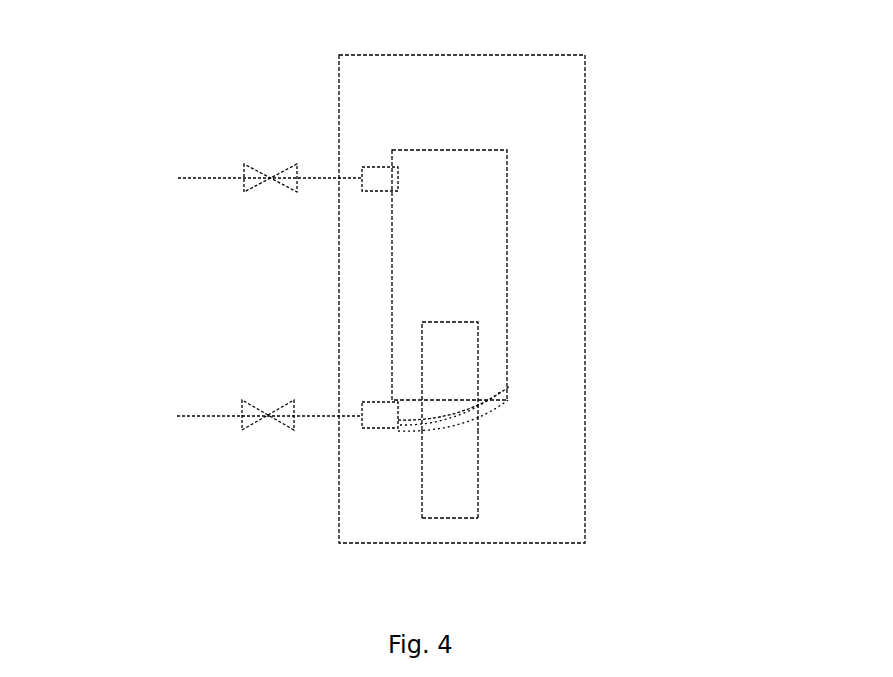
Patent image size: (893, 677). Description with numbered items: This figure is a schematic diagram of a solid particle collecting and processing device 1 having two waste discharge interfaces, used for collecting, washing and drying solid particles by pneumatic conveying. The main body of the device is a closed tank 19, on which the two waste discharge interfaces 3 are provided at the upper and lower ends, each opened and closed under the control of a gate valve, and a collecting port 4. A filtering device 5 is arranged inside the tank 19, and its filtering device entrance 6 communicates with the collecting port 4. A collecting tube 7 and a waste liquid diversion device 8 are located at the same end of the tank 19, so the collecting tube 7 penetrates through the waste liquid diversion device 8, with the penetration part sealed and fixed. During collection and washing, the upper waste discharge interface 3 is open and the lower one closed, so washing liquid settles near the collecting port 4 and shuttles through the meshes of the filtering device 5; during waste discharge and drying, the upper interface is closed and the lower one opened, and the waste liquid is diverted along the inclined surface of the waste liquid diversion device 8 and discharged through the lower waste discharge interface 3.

The solid particle collecting and processing device 1 is at (609, 151).
The waste discharge interface 3 is at (364, 168).
The collecting port 4 is at (448, 518).
The filtering device 5 is at (457, 357).
The filtering device entrance 6 is at (450, 400).
The collecting tube 7 is at (440, 478).
The waste liquid diversion device 8 is at (430, 401).
The tank 19 is at (392, 333).